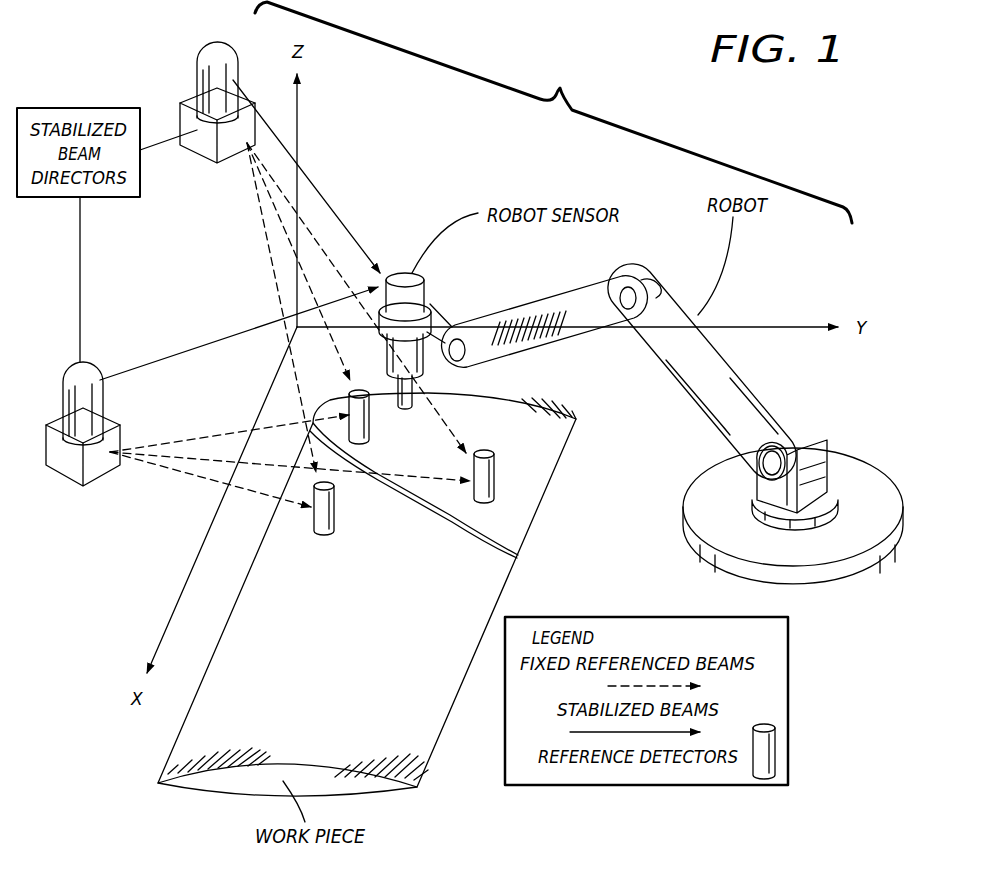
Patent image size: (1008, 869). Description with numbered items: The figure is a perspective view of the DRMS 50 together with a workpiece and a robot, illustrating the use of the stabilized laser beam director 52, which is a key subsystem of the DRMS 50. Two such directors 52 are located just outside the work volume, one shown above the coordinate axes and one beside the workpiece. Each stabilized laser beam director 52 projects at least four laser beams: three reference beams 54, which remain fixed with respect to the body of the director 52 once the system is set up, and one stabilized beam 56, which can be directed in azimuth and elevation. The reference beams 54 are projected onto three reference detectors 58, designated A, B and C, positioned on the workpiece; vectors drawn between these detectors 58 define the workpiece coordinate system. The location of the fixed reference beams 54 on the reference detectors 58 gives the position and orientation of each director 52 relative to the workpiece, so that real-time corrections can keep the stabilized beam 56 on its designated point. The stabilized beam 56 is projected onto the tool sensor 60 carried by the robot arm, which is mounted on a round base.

The DRMS 50 is at (553, 112).
The stabilized laser beam director 52 is at (193, 40).
The reference beams 54 is at (253, 192).
The stabilized beam 56 is at (347, 222).
The reference detectors 58 is at (371, 410).
The tool sensor 60 is at (426, 280).